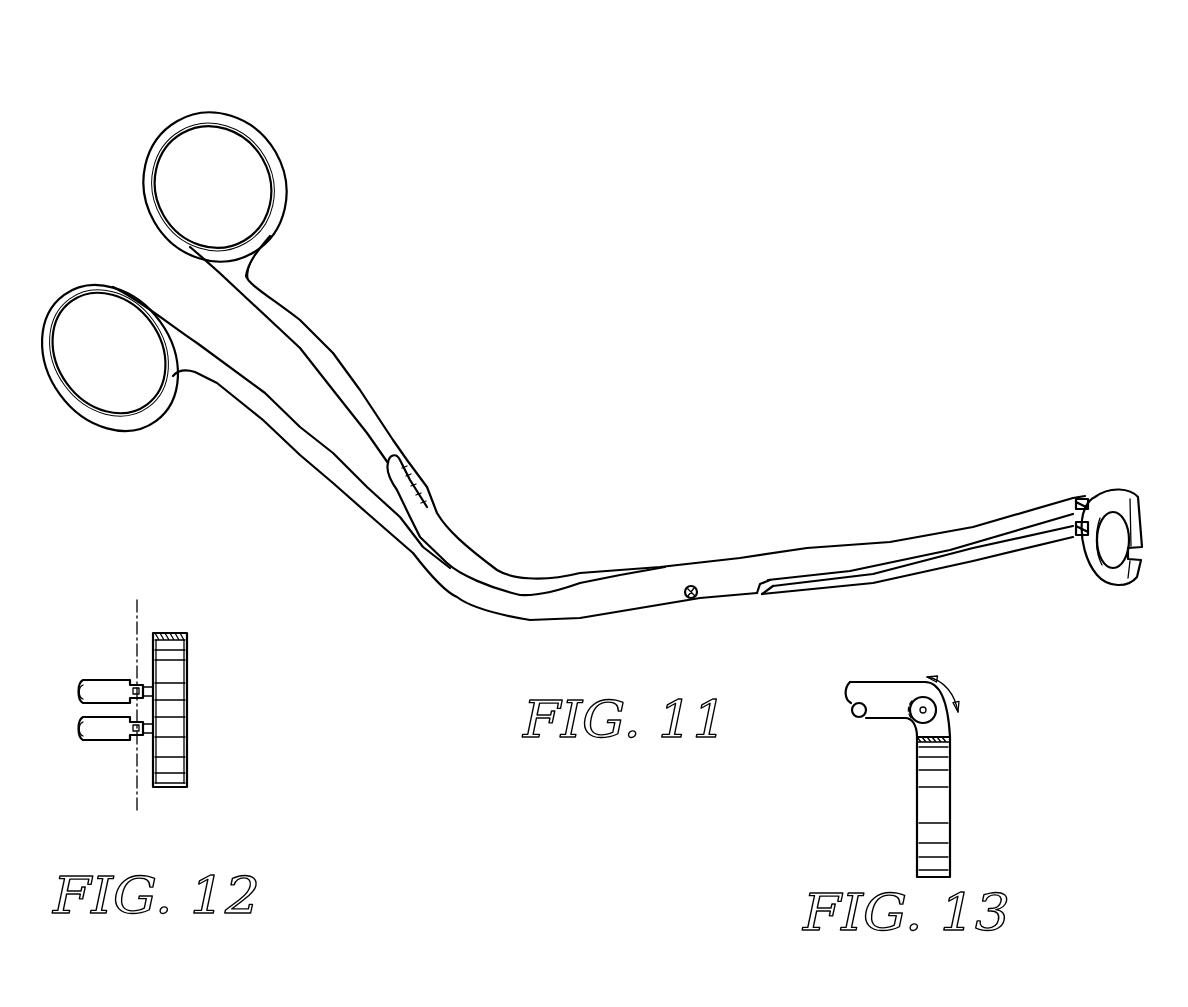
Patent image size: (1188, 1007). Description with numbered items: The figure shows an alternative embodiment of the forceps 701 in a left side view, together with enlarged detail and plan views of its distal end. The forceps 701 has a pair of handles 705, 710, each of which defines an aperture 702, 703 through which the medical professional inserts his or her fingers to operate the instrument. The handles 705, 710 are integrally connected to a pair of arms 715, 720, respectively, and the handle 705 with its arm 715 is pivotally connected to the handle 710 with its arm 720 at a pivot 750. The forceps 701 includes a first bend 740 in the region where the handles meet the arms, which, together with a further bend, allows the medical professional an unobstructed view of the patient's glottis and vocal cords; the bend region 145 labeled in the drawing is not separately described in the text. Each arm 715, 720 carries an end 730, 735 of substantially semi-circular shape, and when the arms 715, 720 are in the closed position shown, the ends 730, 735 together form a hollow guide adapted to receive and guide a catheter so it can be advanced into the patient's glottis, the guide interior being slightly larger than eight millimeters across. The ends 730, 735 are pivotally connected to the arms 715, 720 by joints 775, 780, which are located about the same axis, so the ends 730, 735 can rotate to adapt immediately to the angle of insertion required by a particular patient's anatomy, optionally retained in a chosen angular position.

In FIG. 11, the forceps 701 is at (660, 202).
In FIG. 11, the aperture 702 is at (200, 167).
In FIG. 11, the handle 705 is at (246, 134).
In FIG. 11, the handle 710 is at (88, 297).
In FIG. 11, the aperture 703 is at (100, 360).
In FIG. 11, the first bend 740 is at (405, 478).
In FIG. 11, the shaft bend 145 is at (458, 600).
In FIG. 11, the pivot 750 is at (688, 586).
In FIG. 11, the arm 720 is at (899, 548).
In FIG. 11, the arm 715 is at (793, 595).
In FIG. 11, the joint 780 is at (1077, 497).
In FIG. 12, the joint 780 is at (130, 670).
In FIG. 13, the joint 780 is at (903, 730).
In FIG. 11, the joint 775 is at (1073, 537).
In FIG. 12, the joint 775 is at (130, 747).
In FIG. 11, the end 735 is at (1127, 523).
In FIG. 12, the end 735 is at (170, 632).
In FIG. 13, the end 735 is at (942, 778).
In FIG. 11, the end 730 is at (1133, 582).
In FIG. 12, the end 730 is at (163, 787).